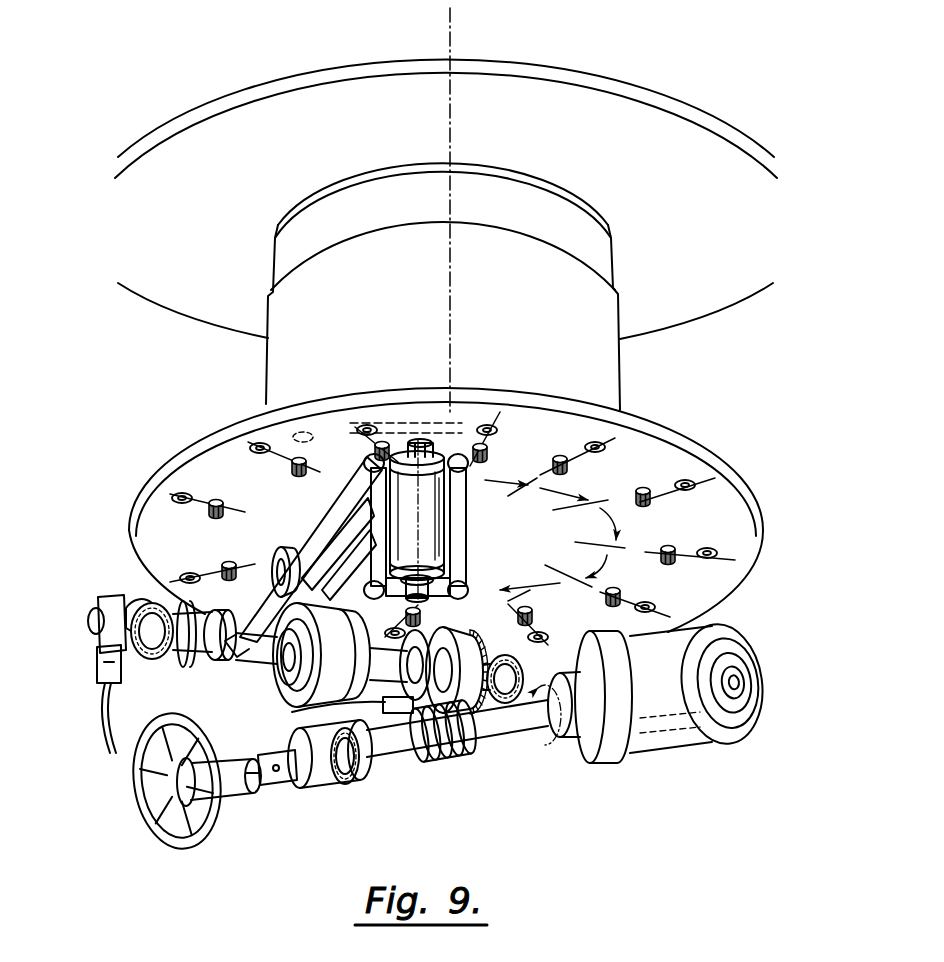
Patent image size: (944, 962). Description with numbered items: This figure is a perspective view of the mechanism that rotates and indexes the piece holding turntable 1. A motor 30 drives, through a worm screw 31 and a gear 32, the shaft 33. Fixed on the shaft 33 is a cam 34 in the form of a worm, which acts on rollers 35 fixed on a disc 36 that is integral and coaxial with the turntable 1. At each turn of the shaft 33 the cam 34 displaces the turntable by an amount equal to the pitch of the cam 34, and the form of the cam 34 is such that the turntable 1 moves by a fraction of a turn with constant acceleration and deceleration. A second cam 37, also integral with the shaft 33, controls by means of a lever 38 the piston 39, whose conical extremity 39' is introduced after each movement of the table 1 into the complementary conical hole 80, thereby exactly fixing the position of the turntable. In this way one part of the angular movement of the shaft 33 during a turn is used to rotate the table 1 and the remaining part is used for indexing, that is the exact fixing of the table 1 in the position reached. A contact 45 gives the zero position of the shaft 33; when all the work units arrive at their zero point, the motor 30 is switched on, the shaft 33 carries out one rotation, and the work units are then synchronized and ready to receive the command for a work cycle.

The turntable 1 is at (503, 58).
The motor 30 is at (638, 700).
The worm screw 31 is at (437, 753).
The gear 32 is at (473, 693).
The shaft 33 is at (258, 645).
The cam 34 is at (293, 690).
The rollers 35 is at (655, 490).
The disc 36 is at (646, 427).
The cam 37 is at (213, 607).
The lever 38 is at (350, 483).
The piston 39 is at (427, 473).
The conical extremity 39' is at (417, 477).
The contact 45 is at (108, 597).
The conical hole 80 is at (595, 443).